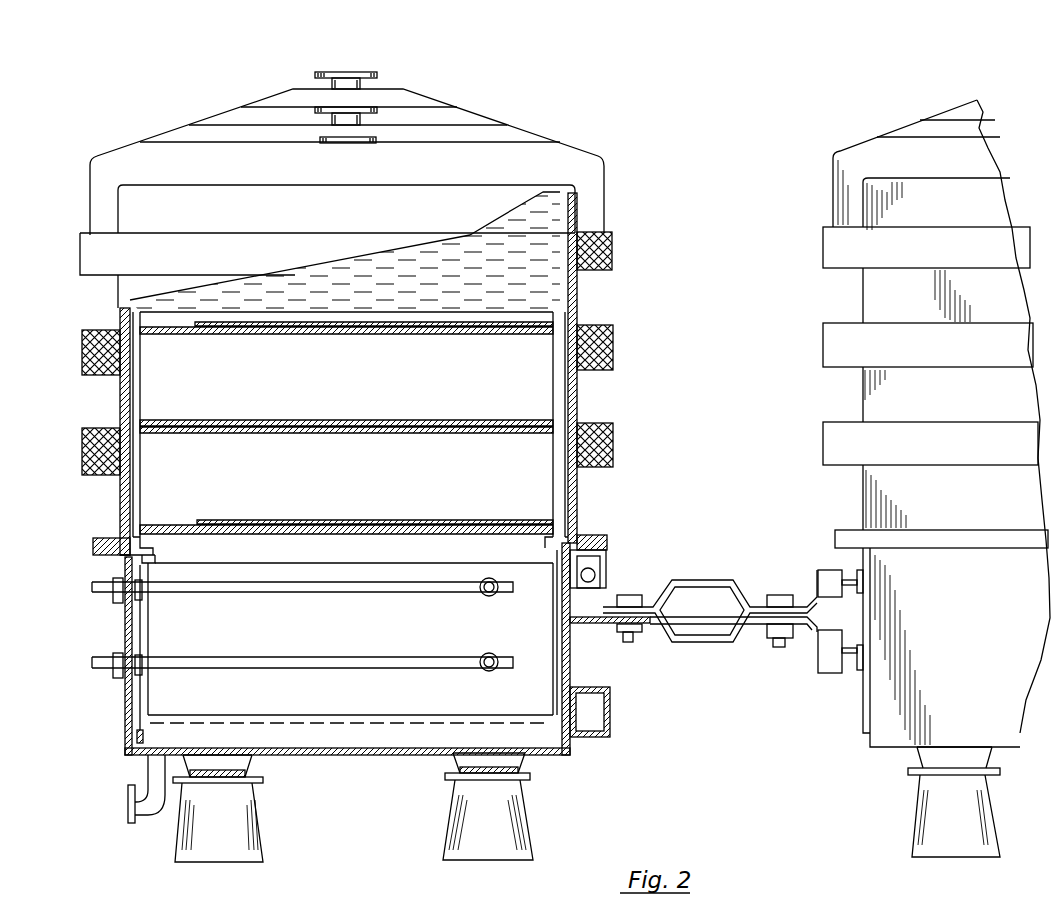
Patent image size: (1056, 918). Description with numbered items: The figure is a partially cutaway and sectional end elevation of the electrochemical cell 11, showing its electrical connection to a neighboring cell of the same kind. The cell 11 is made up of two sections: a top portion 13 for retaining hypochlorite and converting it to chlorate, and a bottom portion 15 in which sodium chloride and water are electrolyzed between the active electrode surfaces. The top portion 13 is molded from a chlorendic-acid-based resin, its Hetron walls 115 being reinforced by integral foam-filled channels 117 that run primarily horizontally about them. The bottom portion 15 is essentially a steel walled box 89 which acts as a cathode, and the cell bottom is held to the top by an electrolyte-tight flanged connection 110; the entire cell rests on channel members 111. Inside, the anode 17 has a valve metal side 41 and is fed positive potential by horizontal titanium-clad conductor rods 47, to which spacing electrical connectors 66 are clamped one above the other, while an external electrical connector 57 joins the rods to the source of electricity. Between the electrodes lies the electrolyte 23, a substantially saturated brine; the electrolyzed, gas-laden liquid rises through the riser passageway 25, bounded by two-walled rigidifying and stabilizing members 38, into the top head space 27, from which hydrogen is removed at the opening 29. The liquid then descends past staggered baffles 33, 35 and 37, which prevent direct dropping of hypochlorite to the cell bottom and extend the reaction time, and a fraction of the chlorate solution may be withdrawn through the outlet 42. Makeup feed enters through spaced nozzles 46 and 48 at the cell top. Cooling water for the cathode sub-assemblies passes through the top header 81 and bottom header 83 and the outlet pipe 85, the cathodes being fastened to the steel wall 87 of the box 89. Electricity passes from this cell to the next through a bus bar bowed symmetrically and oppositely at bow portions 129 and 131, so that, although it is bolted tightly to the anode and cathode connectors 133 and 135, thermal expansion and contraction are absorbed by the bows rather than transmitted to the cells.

The electrochemical cell 11 is at (112, 292).
The top portion 13 is at (118, 215).
The bottom portion 15 is at (125, 720).
The anode 17 is at (135, 690).
The electrolyte 23 is at (337, 732).
The riser passageway 25 is at (478, 306).
The top head space 27 is at (537, 222).
The opening 29 is at (330, 72).
The baffle 33 is at (325, 322).
The baffle 35 is at (300, 418).
The baffle 37 is at (312, 520).
The rigidifying and stabilizing member 38 is at (537, 395).
The valve metal side of anode 41 is at (162, 618).
The outlet 42 is at (128, 800).
The nozzle 46 is at (357, 107).
The conductor rod 47 is at (105, 658).
The nozzle 48 is at (368, 135).
The electrical connector 57 is at (813, 643).
The spacing electrical connector 66 is at (842, 673).
The top header 81 is at (610, 548).
The bottom header 83 is at (610, 712).
The outlet pipe 85 is at (607, 572).
The metal wall 87 is at (575, 655).
The steel walled box 89 is at (555, 752).
The flanged connection 110 is at (93, 545).
The channel member 111 is at (450, 757).
The Hetron wall 115 is at (248, 193).
The reinforcing channel 117 is at (612, 258).
The bow portion 129 is at (707, 580).
The bow portion 131 is at (718, 645).
The anode connector 133 is at (790, 638).
The cathode connector 135 is at (608, 640).